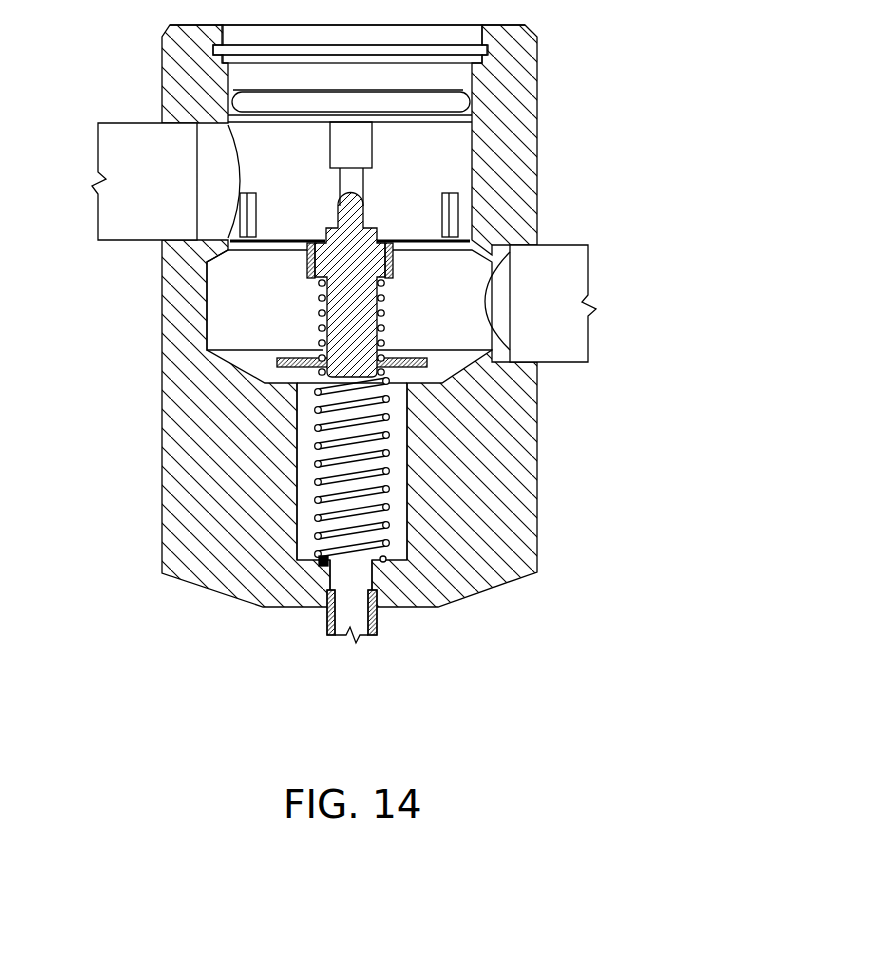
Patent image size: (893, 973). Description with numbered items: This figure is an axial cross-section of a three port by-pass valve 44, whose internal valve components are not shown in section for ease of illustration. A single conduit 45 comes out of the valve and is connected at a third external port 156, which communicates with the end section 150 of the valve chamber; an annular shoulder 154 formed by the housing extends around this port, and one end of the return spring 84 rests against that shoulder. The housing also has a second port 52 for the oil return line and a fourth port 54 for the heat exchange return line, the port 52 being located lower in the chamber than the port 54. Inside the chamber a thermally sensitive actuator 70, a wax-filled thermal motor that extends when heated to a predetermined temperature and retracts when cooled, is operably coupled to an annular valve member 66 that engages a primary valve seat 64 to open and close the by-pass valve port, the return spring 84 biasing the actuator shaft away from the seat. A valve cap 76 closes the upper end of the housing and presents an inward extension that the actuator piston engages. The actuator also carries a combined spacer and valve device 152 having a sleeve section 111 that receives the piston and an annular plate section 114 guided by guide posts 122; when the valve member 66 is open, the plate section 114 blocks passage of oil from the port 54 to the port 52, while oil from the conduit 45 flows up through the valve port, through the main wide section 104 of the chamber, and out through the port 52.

The by-pass valve 44 is at (622, 147).
The single conduit 45 is at (377, 617).
The second port 52 is at (502, 275).
The fourth port 54 is at (175, 143).
The primary valve seat 64 is at (290, 388).
The valve member 66 is at (407, 358).
The thermally sensitive actuator 70 is at (337, 313).
The valve cap 76 is at (460, 78).
The return spring 84 is at (388, 438).
The wide section of the valve chamber 104 is at (217, 302).
The sleeve section 111 is at (353, 180).
The plate section 114 is at (300, 237).
The guide posts 122 is at (445, 229).
The end section of the valve chamber 150 is at (397, 497).
The combined spacer and valve device 152 is at (270, 230).
The annular shoulder 154 is at (307, 555).
The third external port 156 is at (347, 575).